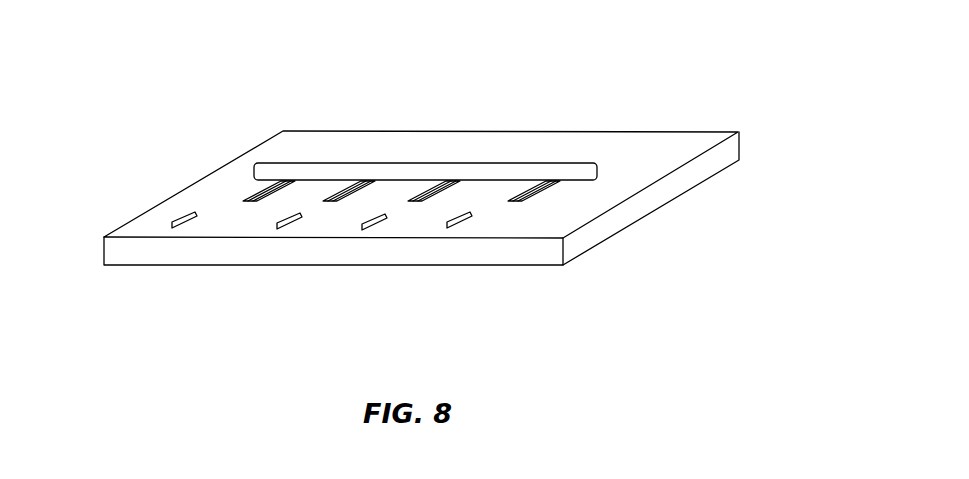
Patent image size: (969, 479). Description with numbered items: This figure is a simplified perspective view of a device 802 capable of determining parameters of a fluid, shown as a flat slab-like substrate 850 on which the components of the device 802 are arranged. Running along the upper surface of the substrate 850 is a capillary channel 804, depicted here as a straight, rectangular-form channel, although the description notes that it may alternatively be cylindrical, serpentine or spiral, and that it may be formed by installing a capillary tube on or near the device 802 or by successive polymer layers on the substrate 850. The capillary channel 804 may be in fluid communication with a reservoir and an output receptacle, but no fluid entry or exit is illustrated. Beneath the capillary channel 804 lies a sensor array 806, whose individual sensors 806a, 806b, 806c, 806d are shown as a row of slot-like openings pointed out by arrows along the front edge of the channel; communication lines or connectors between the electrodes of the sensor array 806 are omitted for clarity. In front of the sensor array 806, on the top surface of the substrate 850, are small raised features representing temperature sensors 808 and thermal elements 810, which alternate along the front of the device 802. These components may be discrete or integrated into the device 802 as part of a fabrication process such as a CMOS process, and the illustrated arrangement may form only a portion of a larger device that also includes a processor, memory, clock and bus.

The device 802 is at (446, 174).
The capillary channel 804 is at (428, 163).
The sensor array 806 is at (318, 244).
The sensor of sensor array 806a is at (254, 223).
The sensor of sensor array 806b is at (337, 223).
The sensor of sensor array 806c is at (423, 223).
The sensor of sensor array 806d is at (521, 223).
The temperature sensors 808 is at (176, 229).
The thermal elements 810 is at (280, 230).
The substrate 850 is at (265, 142).